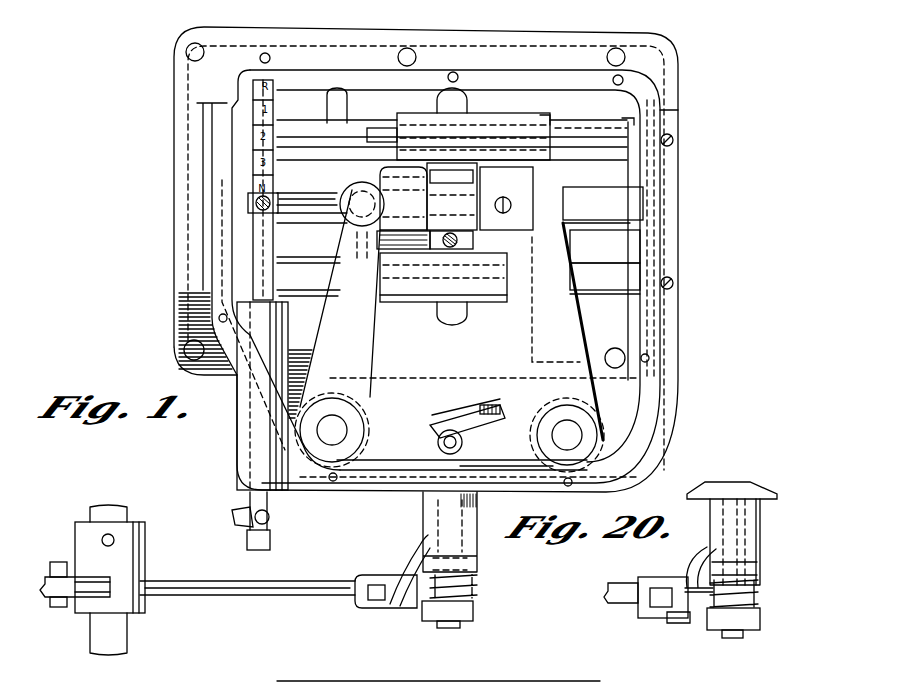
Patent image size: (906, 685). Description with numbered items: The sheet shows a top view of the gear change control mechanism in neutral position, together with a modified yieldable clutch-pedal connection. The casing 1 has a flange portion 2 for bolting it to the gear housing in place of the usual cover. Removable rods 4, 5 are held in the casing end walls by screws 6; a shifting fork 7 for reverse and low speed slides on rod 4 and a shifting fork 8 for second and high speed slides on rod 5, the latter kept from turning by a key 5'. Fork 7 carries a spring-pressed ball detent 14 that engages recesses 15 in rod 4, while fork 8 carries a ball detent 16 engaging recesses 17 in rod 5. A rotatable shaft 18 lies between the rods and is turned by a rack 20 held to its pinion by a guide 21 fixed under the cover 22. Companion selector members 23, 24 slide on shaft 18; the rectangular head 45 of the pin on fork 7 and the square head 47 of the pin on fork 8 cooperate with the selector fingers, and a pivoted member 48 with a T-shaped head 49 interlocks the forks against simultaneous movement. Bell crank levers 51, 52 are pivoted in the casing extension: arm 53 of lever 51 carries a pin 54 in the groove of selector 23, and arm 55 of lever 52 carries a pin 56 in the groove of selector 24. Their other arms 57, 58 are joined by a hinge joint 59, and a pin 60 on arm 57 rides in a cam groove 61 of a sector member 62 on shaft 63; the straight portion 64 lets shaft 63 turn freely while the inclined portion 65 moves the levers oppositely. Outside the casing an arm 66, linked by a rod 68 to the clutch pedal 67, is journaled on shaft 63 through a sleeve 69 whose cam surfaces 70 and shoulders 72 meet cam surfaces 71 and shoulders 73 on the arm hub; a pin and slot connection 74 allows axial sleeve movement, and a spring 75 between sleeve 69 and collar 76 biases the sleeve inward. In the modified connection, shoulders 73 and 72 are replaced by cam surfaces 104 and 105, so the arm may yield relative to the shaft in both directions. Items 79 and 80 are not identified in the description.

In FIG. 1, the casing 1 is at (555, 70).
In FIG. 1, the flange portion 2 is at (640, 48).
In FIG. 1, the rod 4 is at (613, 136).
In FIG. 1, the rod 5 is at (605, 278).
In FIG. 1, the key 5' is at (539, 302).
In FIG. 1, the screws 6 is at (672, 140).
In FIG. 1, the shifting fork 7 is at (525, 113).
In FIG. 1, the shifting fork 8 is at (497, 303).
In FIG. 1, the spring-pressed ball detent 14 is at (449, 108).
In FIG. 1, the recesses 15 is at (385, 136).
In FIG. 1, the spring-pressed ball detent 16 is at (455, 312).
In FIG. 1, the recesses 17 is at (405, 303).
In FIG. 1, the rotatable shaft 18 is at (607, 200).
In FIG. 1, the rack 20 is at (258, 270).
In FIG. 1, the guide 21 is at (250, 203).
In FIG. 1, the cover 22 is at (508, 681).
In FIG. 1, the selector member 23 is at (397, 203).
In FIG. 1, the selector member 24 is at (567, 183).
In FIG. 1, the rectangular head 45 is at (452, 196).
In FIG. 1, the square head 47 is at (447, 243).
In FIG. 1, the pivoted member 48 is at (617, 188).
In FIG. 1, the T-shaped head 49 is at (481, 307).
In FIG. 1, the bell crank lever 51 is at (328, 455).
In FIG. 1, the bell crank lever 52 is at (585, 448).
In FIG. 1, the arm 53 is at (340, 298).
In FIG. 1, the pin 54 is at (352, 203).
In FIG. 1, the arm 55 is at (567, 331).
In FIG. 1, the pin 56 is at (577, 230).
In FIG. 1, the arm 57 is at (347, 430).
In FIG. 1, the arm 58 is at (530, 415).
In FIG. 1, the hinge joint 59 is at (480, 475).
In FIG. 1, the pin 60 is at (432, 428).
In FIG. 1, the cam groove 61 is at (490, 417).
In FIG. 1, the sector member 62 is at (447, 415).
In FIG. 1, the shaft 63 is at (450, 628).
In FIG. 20, the shaft 63 is at (738, 640).
In FIG. 1, the straight portion 64 is at (493, 400).
In FIG. 1, the inclined portion 65 is at (468, 405).
In FIG. 20, the arm 66 is at (682, 567).
In FIG. 1, the clutch pedal 67 is at (45, 582).
In FIG. 1, the rod 68 is at (253, 590).
In FIG. 20, the rod 68 is at (628, 607).
In FIG. 1, the sleeve 69 is at (478, 561).
In FIG. 20, the sleeve 69 is at (752, 568).
In FIG. 1, the cam surfaces 70 is at (471, 553).
In FIG. 20, the cam surfaces 70 is at (700, 560).
In FIG. 1, the cam surfaces 71 is at (426, 508).
In FIG. 20, the cam surfaces 71 is at (718, 533).
In FIG. 1, the shoulders 72 is at (473, 546).
In FIG. 1, the shoulders 73 is at (467, 543).
In FIG. 1, the pin and slot connection 74 is at (473, 571).
In FIG. 20, the pin and slot connection 74 is at (750, 583).
In FIG. 1, the spring 75 is at (475, 598).
In FIG. 20, the spring 75 is at (753, 602).
In FIG. 1, the collar 76 is at (478, 612).
In FIG. 20, the collar 76 is at (753, 624).
In FIG. 1, the cotter pin 79 is at (242, 518).
In FIG. 1, the bolt 80 is at (270, 530).
In FIG. 20, the cam surfaces 104 is at (760, 528).
In FIG. 20, the cam surfaces 105 is at (752, 545).